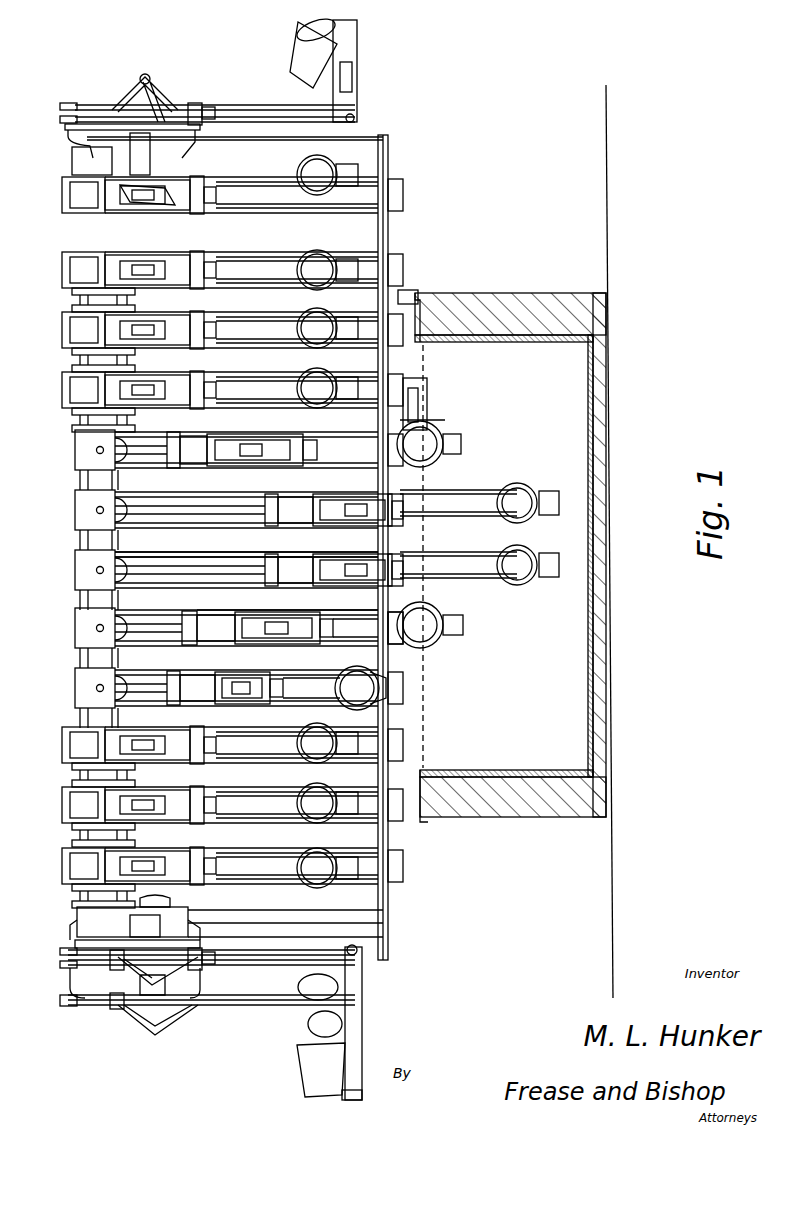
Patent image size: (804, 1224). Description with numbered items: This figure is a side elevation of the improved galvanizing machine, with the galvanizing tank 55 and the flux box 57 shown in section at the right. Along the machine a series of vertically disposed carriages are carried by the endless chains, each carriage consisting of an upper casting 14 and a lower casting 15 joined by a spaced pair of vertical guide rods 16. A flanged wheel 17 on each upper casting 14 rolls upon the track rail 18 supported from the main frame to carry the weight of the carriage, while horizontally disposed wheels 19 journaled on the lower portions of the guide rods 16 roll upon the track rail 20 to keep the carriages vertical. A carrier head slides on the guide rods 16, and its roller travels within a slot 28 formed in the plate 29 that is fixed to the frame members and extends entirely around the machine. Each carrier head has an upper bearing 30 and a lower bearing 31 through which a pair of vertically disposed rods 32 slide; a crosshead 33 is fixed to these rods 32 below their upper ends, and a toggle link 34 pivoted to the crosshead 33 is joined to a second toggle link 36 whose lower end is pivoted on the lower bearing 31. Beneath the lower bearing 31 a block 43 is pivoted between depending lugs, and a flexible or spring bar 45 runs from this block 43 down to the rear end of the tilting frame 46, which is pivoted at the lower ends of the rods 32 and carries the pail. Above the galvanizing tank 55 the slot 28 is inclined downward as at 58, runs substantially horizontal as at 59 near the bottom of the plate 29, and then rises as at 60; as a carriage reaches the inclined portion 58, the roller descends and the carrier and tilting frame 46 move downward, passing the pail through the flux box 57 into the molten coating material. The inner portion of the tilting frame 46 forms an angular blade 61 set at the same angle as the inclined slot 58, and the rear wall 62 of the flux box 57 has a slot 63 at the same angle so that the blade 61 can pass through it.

The upper casting 14 is at (76, 566).
The lower casting 15 is at (420, 752).
The vertical guide rods 16 is at (156, 584).
The flanged wheel 17 is at (146, 606).
The track rail 18 is at (84, 606).
The horizontally disposed wheels 19 is at (385, 744).
The track rail 20 is at (385, 768).
The slot 28 is at (66, 312).
The plate 29 is at (403, 298).
The upper bearing 30 is at (183, 630).
The lower bearing 31 is at (322, 638).
The vertically disposed rods 32 is at (215, 628).
The crosshead 33 is at (220, 611).
The toggle link 34 is at (242, 614).
The toggle link 36 is at (280, 636).
The block 43 is at (340, 638).
The flexible or spring bar 45 is at (363, 627).
The tilting frame 46 is at (465, 628).
The galvanizing tank 55 is at (520, 812).
The flux box 57 is at (416, 388).
The inclined slot portion 58 is at (168, 440).
The horizontal slot portion 59 is at (300, 550).
The upward slot portion 60 is at (266, 560).
The angular blade 61 is at (462, 444).
The rear wall 62 is at (430, 398).
The slot 63 is at (445, 418).